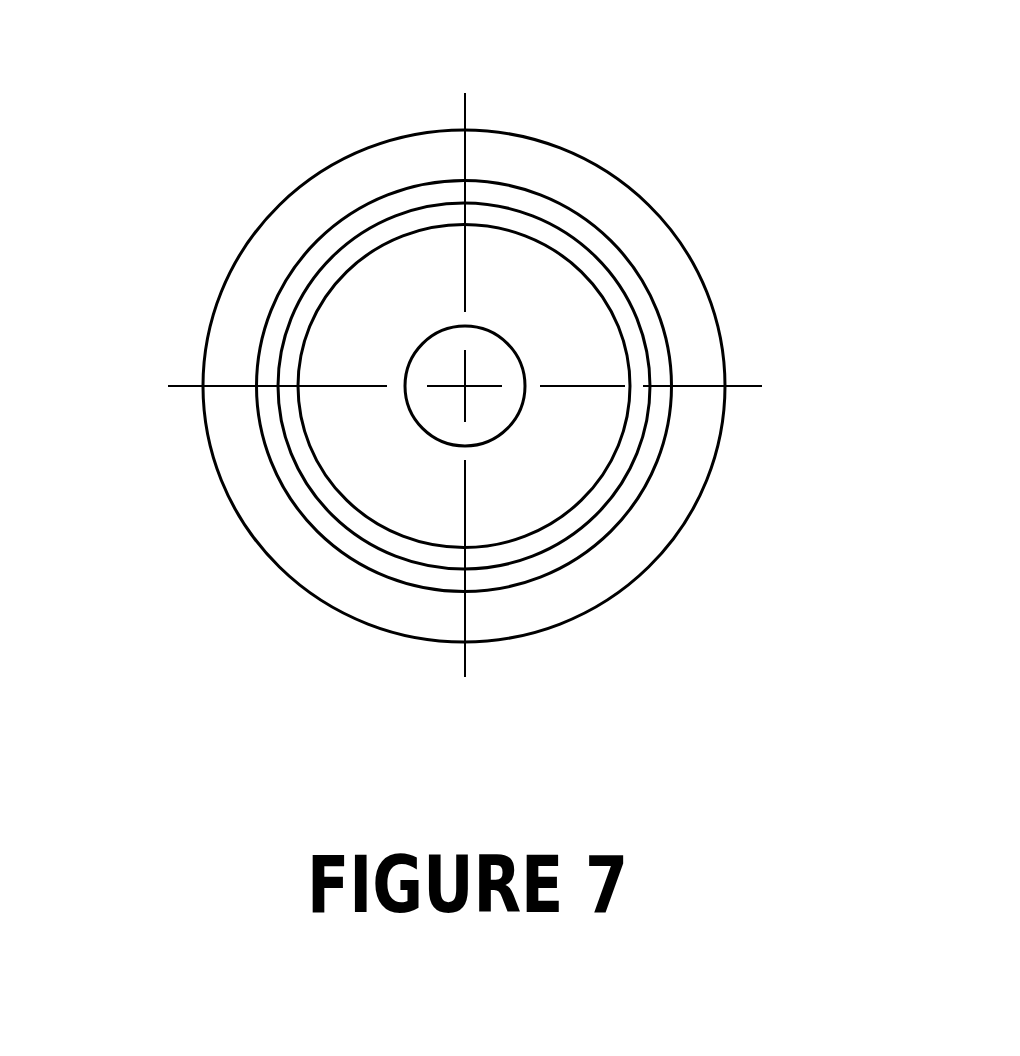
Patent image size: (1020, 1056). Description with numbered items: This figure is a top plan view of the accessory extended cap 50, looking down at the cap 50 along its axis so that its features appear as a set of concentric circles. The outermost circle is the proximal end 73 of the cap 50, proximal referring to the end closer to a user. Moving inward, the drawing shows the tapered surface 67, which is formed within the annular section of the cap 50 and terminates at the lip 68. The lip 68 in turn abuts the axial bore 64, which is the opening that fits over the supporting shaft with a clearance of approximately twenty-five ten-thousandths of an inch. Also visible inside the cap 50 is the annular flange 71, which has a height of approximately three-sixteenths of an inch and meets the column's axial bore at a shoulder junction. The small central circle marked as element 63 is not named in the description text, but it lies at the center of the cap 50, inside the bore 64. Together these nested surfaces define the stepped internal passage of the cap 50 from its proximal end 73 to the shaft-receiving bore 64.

The accessory extended cap 50 is at (378, 97).
The central bore 63 is at (495, 327).
The axial bore 64 is at (592, 277).
The tapered surface 67 is at (672, 430).
The lip 68 is at (610, 505).
The annular flange 71 is at (368, 450).
The proximal end 73 is at (302, 187).